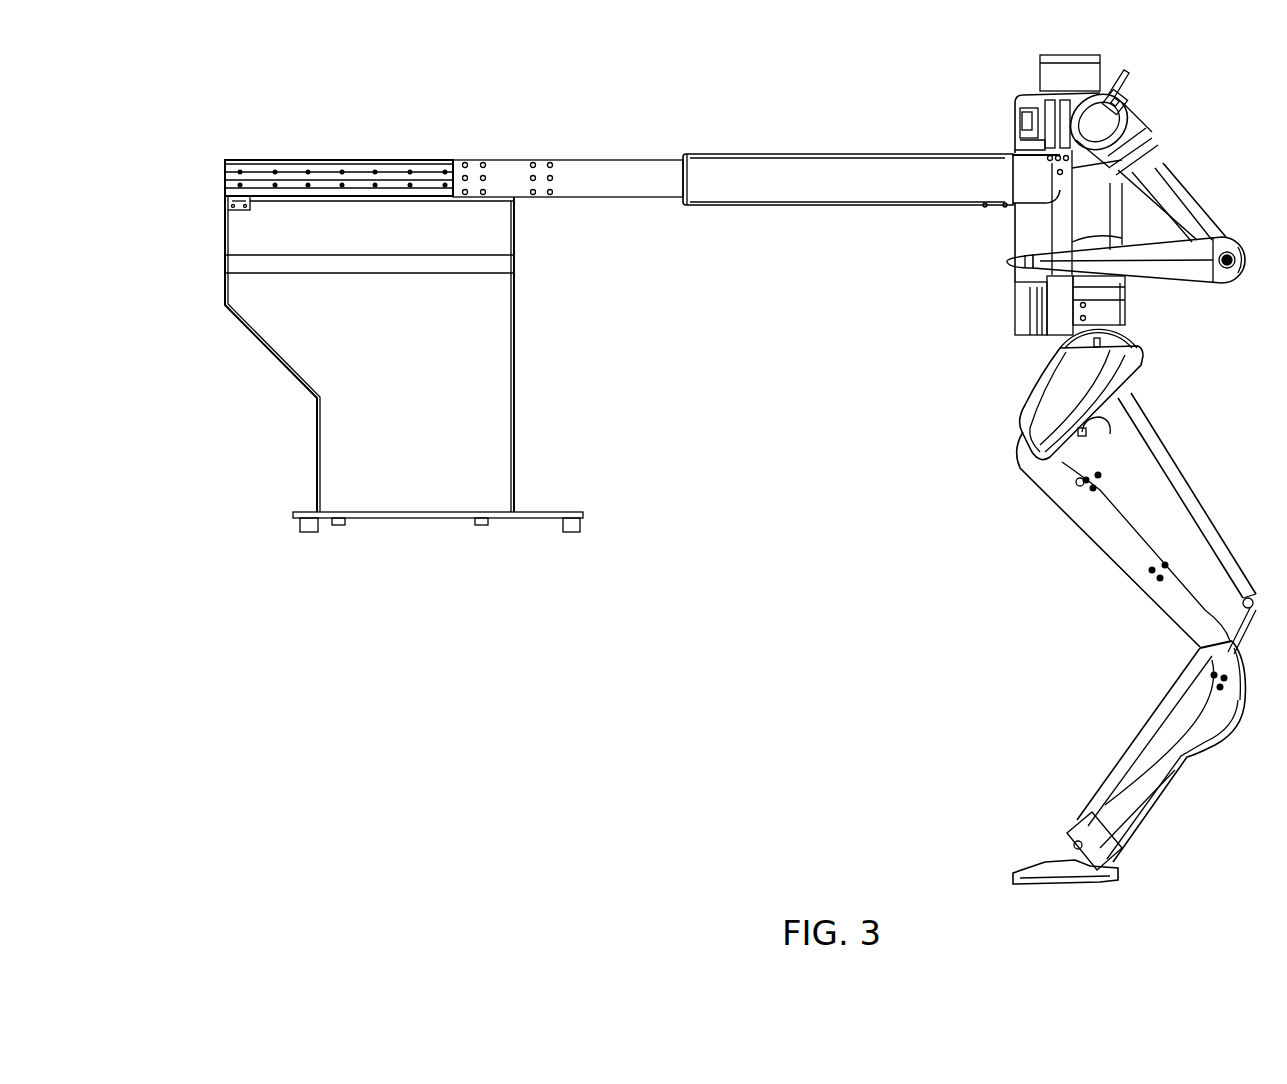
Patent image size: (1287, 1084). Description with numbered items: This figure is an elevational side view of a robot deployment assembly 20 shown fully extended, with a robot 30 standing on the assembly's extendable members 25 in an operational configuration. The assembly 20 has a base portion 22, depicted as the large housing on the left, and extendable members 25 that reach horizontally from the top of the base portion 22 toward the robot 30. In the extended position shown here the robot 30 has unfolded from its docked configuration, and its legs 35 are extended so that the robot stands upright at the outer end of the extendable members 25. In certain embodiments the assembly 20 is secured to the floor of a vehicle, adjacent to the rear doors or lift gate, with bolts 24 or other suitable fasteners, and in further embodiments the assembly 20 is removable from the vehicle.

The robot deployment assembly 20 is at (192, 328).
The base portion 22 is at (280, 365).
The bolts 24 is at (300, 522).
The extendable members 25 is at (633, 180).
The robot 30 is at (1201, 89).
The legs 35 is at (1088, 542).